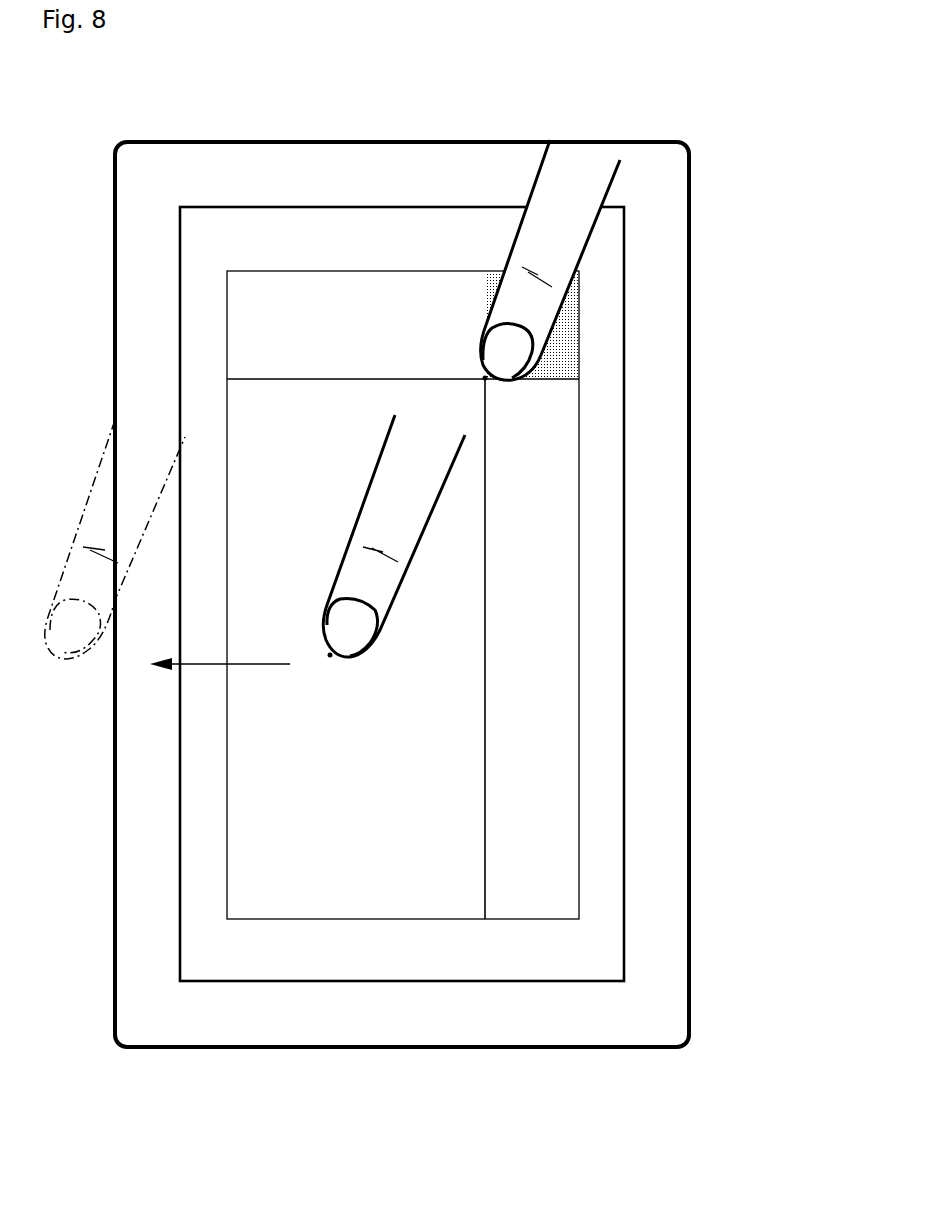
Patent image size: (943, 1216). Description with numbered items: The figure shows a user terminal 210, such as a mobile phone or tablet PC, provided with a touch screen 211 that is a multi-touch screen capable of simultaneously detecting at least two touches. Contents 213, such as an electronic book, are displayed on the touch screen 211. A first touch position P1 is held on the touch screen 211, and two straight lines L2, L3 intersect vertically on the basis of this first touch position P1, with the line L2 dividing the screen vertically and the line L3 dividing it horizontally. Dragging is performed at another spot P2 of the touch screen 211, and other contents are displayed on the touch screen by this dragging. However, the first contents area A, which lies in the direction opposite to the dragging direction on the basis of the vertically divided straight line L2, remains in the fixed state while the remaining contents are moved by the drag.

The user terminal 210 is at (163, 147).
The touch screen 211 is at (265, 225).
The contents 213 is at (370, 298).
The first contents area A is at (567, 318).
The straight line L3 is at (578, 355).
The vertically divided straight line L2 is at (487, 823).
The first touch position P1 is at (485, 378).
The another spot P2 is at (330, 655).